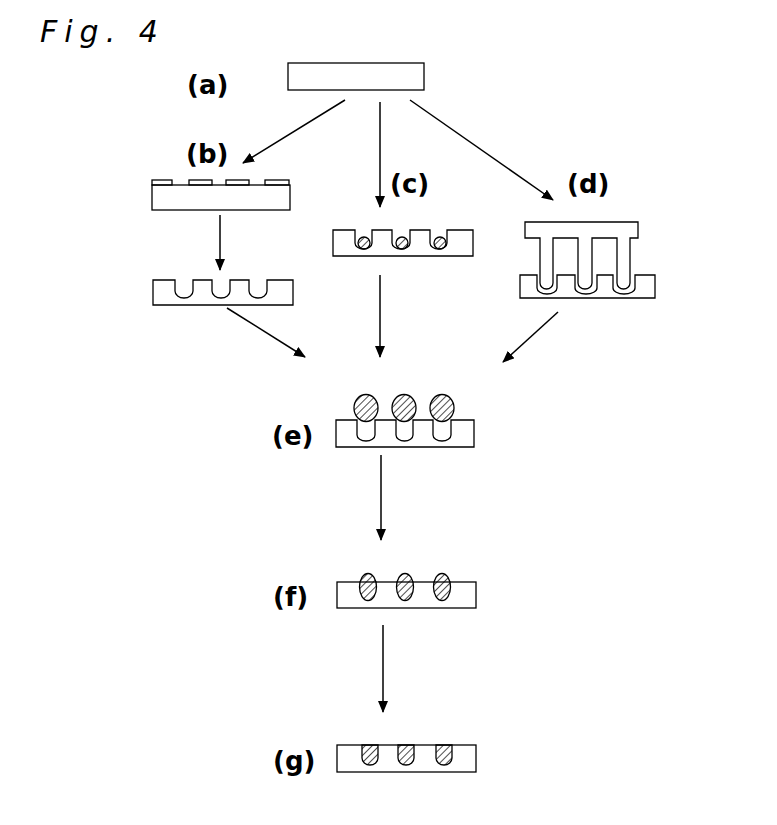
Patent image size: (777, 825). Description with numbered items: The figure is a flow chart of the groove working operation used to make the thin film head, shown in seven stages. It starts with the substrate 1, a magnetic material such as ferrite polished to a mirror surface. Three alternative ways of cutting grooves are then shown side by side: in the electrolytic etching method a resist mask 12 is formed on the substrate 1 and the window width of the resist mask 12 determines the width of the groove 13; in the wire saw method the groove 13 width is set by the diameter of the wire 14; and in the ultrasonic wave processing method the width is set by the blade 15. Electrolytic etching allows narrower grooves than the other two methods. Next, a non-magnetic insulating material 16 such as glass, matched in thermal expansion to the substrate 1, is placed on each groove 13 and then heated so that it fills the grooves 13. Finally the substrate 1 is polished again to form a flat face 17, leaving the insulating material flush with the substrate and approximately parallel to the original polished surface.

The substrate 1 is at (424, 73).
The resist mask 12 is at (290, 183).
The groove 13 is at (258, 290).
The wire 14 is at (442, 237).
The blade 15 is at (612, 231).
The non-magnetic insulating material 16 is at (451, 403).
The flat face 17 is at (432, 745).